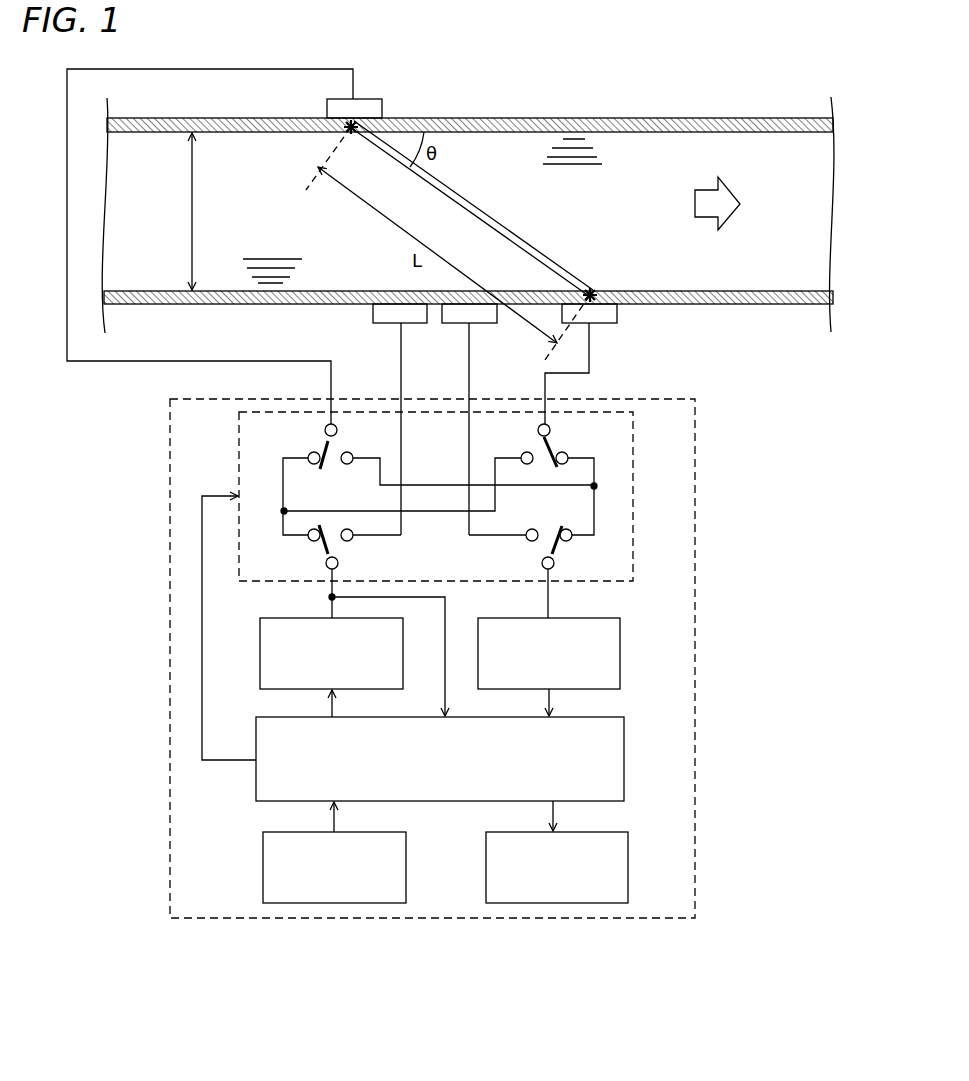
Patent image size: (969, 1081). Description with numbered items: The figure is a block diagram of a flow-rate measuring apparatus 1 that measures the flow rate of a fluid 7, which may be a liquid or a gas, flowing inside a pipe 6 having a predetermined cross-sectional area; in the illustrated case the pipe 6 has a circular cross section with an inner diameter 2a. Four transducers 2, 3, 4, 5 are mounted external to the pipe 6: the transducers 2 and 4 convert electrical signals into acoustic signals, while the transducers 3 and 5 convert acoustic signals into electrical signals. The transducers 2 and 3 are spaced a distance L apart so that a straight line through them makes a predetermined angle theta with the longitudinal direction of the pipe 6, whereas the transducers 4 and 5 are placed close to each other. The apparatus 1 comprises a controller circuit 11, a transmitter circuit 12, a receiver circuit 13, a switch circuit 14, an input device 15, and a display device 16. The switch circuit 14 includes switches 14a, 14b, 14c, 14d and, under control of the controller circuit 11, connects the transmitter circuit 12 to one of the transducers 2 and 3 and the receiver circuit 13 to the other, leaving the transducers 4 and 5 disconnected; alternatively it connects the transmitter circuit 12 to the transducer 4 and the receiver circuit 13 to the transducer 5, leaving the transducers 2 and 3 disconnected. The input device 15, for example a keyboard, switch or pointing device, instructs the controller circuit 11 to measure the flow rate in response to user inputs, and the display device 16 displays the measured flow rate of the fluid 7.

The flow-rate measuring apparatus 1 is at (697, 530).
The transducer 2 is at (327, 112).
The inner diameter 2a is at (175, 211).
The transducer 3 is at (617, 315).
The transducer 4 is at (372, 308).
The transducer 5 is at (485, 323).
The pipe 6 is at (662, 128).
The fluid 7 is at (793, 215).
The controller circuit 11 is at (625, 737).
The transmitter circuit 12 is at (260, 652).
The receiver circuit 13 is at (622, 657).
The switch circuit 14 is at (458, 496).
The switch 14a is at (323, 442).
The switch 14b is at (553, 445).
The switch 14c is at (317, 547).
The switch 14d is at (557, 552).
The input device 15 is at (263, 850).
The display device 16 is at (627, 853).